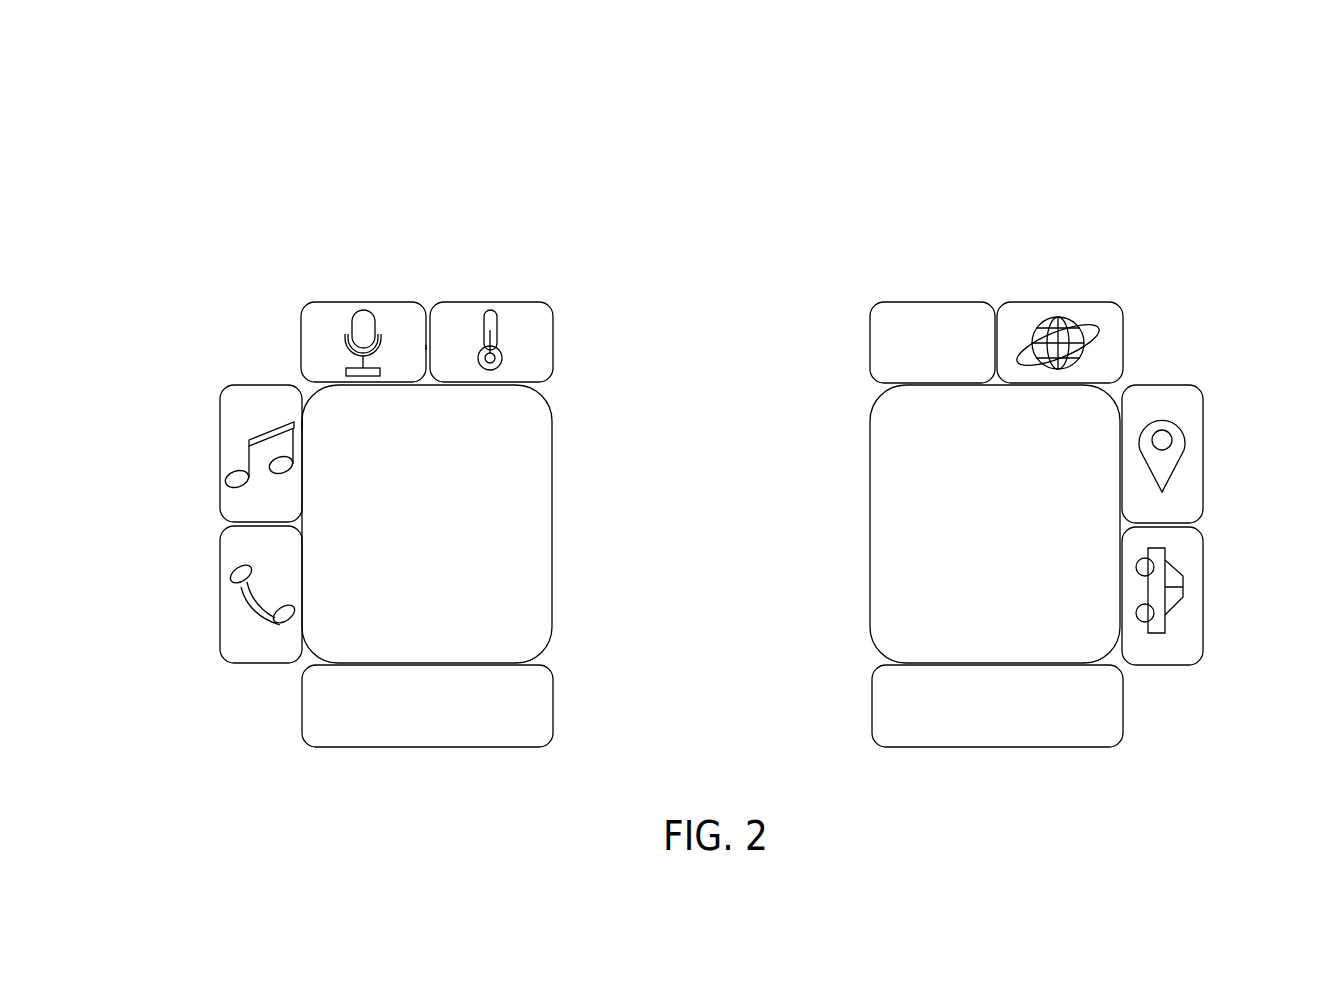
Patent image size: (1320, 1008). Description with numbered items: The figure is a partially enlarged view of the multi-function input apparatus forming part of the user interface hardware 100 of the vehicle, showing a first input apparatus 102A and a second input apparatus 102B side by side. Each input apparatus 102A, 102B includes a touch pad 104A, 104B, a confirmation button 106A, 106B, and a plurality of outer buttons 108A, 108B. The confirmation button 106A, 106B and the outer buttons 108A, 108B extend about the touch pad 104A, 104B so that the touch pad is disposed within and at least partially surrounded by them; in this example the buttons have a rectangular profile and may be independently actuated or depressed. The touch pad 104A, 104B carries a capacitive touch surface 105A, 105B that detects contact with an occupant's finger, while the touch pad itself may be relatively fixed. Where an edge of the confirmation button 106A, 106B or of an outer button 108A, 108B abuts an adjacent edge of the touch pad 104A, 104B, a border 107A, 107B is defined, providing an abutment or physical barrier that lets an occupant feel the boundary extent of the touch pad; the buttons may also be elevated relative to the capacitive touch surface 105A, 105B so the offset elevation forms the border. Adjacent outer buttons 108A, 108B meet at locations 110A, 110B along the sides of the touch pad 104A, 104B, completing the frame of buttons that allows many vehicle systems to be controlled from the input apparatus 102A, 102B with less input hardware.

The user interface hardware 100 is at (195, 157).
The input apparatus 102A is at (262, 282).
The input apparatus 102B is at (1163, 283).
The touch pad 104A is at (534, 539).
The touch pad 104B is at (881, 560).
The capacitive touch surface 105A is at (438, 529).
The capacitive touch surface 105B is at (983, 496).
The confirmation button 106A is at (316, 713).
The confirmation button 106B is at (886, 713).
The border 107A is at (500, 385).
The border 107B is at (930, 385).
The plurality of outer buttons 108A is at (365, 306).
The plurality of outer buttons 108B is at (1060, 306).
The tile junction of first device 110A is at (440, 378).
The tile junction of second device 110B is at (1126, 596).